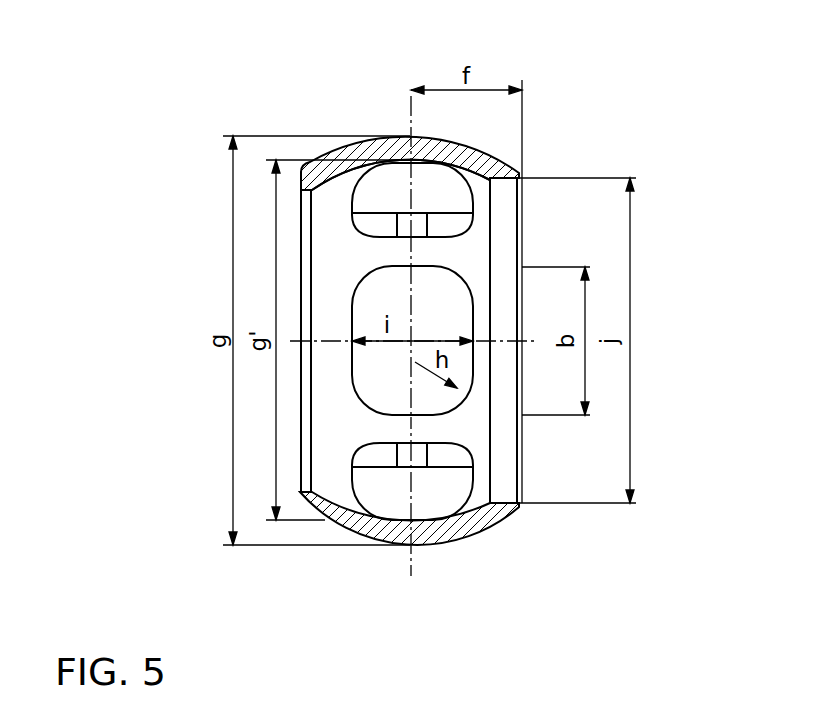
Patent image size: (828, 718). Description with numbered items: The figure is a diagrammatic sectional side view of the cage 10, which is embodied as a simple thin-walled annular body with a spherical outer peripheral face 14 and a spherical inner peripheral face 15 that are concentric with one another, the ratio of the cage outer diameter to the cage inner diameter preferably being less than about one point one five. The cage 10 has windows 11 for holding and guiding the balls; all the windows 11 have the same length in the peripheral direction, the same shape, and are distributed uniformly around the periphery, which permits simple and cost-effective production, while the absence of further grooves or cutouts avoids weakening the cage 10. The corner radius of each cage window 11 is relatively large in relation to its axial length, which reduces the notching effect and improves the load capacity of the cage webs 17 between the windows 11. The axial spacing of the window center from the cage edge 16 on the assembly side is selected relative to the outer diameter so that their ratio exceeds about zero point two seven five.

The cage 10 is at (414, 289).
The windows 11 is at (455, 218).
The outer peripheral face 14 is at (402, 135).
The inner peripheral face 15 is at (342, 193).
The cage edge 16 is at (525, 230).
The cage webs 17 is at (398, 253).